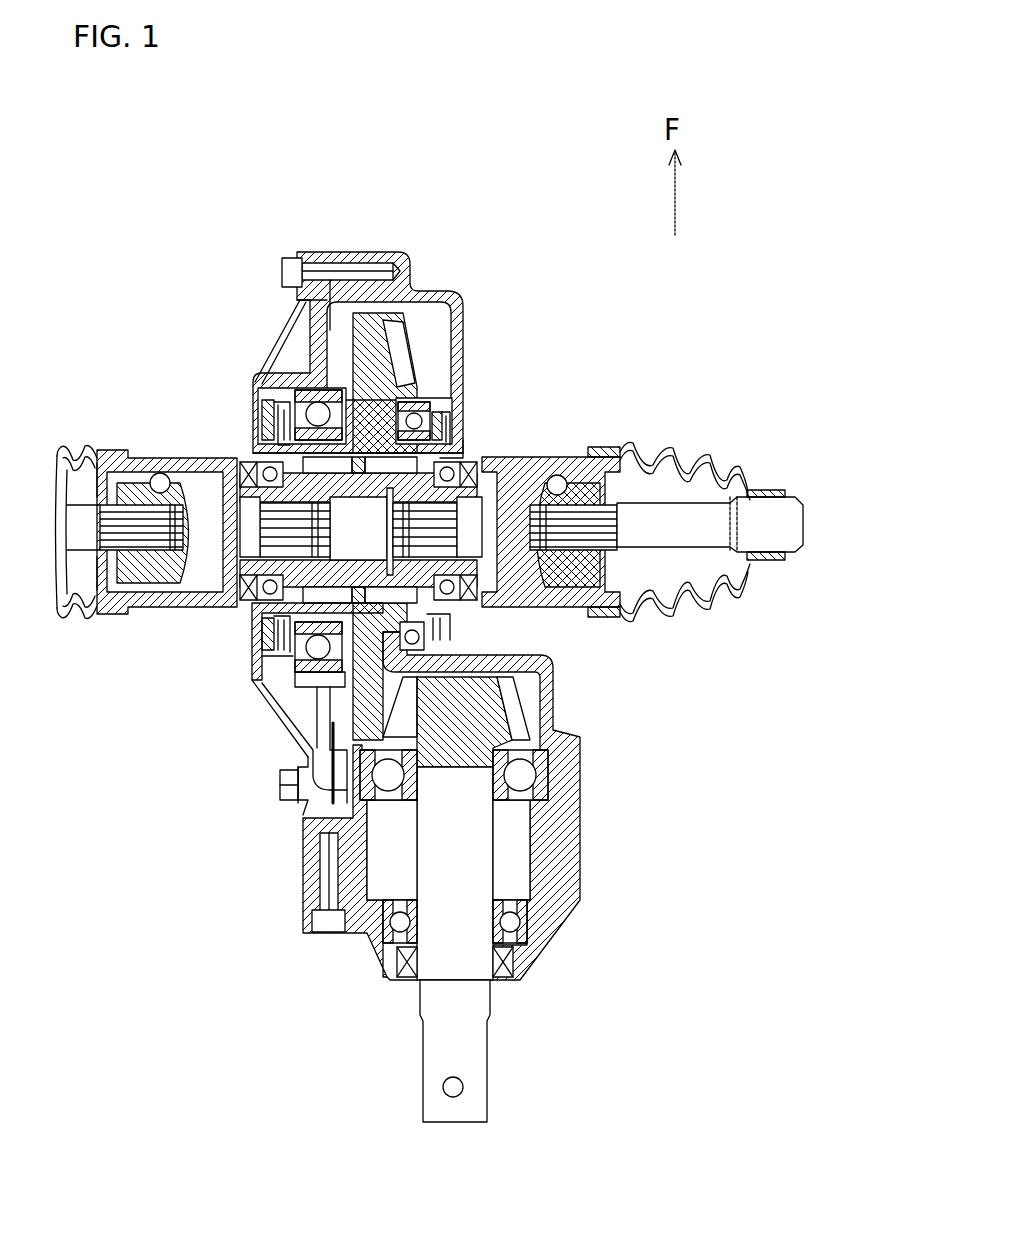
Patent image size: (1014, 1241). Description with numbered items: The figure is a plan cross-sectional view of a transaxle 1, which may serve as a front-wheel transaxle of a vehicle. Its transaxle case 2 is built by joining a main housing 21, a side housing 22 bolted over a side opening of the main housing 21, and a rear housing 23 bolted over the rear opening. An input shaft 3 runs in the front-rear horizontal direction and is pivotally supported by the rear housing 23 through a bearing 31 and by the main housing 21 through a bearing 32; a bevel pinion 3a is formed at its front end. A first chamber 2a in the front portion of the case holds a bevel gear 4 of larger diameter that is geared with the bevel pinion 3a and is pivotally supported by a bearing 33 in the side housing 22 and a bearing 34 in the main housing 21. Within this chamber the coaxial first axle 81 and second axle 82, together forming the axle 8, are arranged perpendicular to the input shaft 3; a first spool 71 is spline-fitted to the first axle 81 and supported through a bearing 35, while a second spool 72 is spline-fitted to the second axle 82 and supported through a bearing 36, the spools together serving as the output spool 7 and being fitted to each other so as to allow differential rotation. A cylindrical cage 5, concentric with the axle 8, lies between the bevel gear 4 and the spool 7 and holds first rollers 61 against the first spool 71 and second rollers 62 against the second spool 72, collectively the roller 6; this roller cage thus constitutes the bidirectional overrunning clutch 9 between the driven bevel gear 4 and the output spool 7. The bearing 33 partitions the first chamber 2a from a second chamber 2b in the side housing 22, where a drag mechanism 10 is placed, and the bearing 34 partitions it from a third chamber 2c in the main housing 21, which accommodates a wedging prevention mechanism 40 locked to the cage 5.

The transaxle 1 is at (207, 222).
The transaxle case 2 is at (556, 347).
The first chamber 2a is at (292, 745).
The second chamber 2b is at (262, 686).
The third chamber 2c is at (500, 668).
The main housing 21 is at (463, 302).
The side housing 22 is at (253, 647).
The rear housing 23 is at (373, 960).
The input shaft 3 is at (467, 1040).
The bevel pinion 3a is at (567, 741).
The bearing 31 is at (530, 937).
The bearing 32 is at (547, 780).
The bearing 33 is at (320, 680).
The bearing 34 is at (440, 418).
The bearing 35 is at (260, 452).
The bearing 36 is at (470, 462).
The bevel gear 4 is at (400, 327).
The wedging prevention mechanism 40 is at (447, 440).
The cage 5 is at (265, 625).
The roller 6 is at (364, 376).
The first rollers 61 is at (312, 408).
The second rollers 62 is at (417, 397).
The spool 7 is at (430, 547).
The first spool 71 is at (242, 600).
The second spool 72 is at (540, 604).
The axle 8 is at (377, 503).
The first axle 81 is at (262, 468).
The second axle 82 is at (480, 470).
The bidirectional overrunning clutch 9 is at (327, 380).
The drag mechanism 10 is at (275, 428).